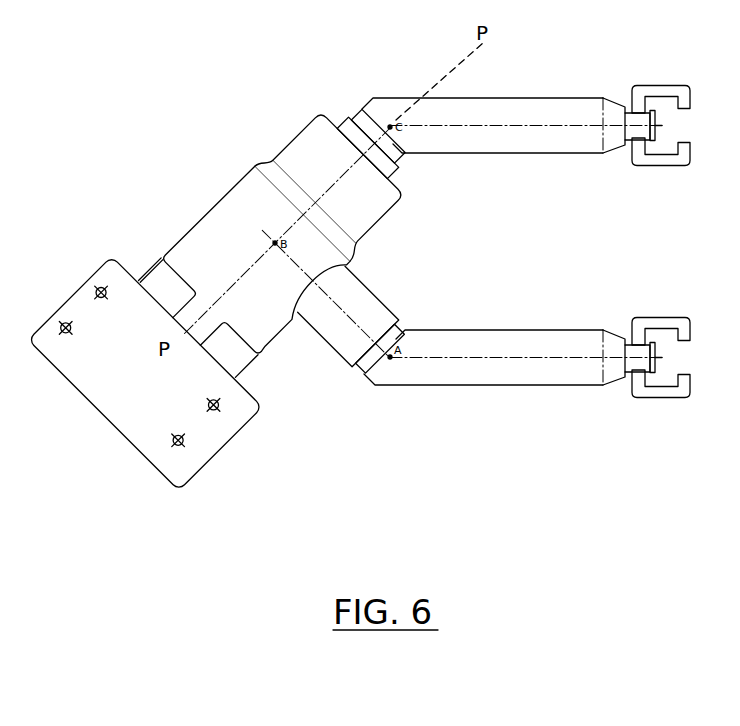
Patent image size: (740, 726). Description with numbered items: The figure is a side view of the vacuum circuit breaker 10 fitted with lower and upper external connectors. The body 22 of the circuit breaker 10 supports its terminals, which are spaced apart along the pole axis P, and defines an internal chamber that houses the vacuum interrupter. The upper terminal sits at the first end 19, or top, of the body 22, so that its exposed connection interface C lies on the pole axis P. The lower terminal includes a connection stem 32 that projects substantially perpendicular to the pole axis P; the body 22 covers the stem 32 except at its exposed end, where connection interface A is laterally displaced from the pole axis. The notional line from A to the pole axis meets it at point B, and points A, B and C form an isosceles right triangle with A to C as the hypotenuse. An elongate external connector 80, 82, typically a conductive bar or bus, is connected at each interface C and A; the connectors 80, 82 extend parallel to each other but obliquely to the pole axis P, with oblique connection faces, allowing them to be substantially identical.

The circuit breaker 10 is at (194, 104).
The first end 19 is at (322, 118).
The body 22 is at (214, 207).
The connection stem 32 is at (357, 298).
The external connector 80 is at (545, 152).
The external connector 82 is at (543, 333).